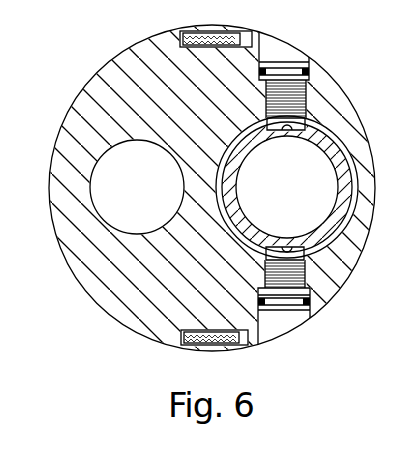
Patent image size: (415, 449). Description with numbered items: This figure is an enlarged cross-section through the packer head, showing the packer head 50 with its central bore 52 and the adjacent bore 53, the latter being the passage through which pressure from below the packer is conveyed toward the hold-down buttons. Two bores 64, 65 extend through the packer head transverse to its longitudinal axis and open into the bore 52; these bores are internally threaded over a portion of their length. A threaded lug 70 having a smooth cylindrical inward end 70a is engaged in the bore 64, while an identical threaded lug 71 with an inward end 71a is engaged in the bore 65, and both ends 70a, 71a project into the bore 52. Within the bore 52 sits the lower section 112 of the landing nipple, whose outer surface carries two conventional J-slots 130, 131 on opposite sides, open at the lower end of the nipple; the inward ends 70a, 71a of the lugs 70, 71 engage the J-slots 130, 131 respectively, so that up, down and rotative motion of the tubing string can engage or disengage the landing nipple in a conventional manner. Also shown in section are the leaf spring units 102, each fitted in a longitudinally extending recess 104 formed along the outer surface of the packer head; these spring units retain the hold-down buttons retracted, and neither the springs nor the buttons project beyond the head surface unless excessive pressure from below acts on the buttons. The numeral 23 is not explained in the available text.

The shaft bore 23 is at (325, 187).
The housing body 50 is at (125, 57).
The bore 52 is at (349, 195).
The bore 53 is at (92, 170).
The bore 64 is at (268, 40).
The bore 65 is at (262, 326).
The threaded lug 70 is at (324, 97).
The inward end 70a is at (315, 127).
The threaded lug 71 is at (326, 269).
The inward end 71a is at (307, 243).
The leaf spring unit 102 is at (238, 10).
The longitudinally extending recess 104 is at (180, 35).
The lower section 112 is at (345, 167).
The J-slot 130 is at (288, 246).
The J-slot 131 is at (289, 129).